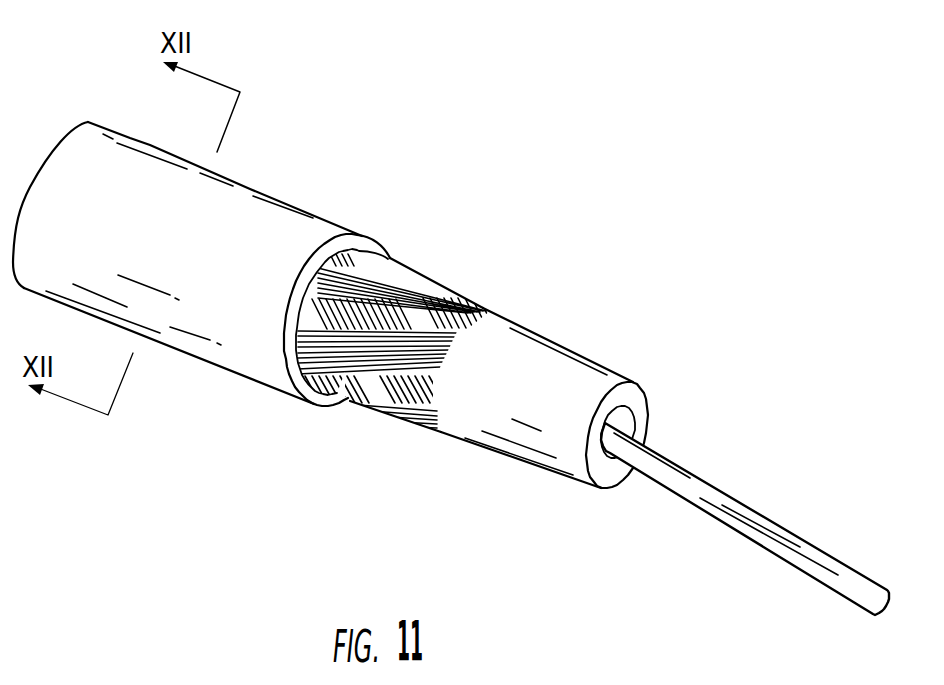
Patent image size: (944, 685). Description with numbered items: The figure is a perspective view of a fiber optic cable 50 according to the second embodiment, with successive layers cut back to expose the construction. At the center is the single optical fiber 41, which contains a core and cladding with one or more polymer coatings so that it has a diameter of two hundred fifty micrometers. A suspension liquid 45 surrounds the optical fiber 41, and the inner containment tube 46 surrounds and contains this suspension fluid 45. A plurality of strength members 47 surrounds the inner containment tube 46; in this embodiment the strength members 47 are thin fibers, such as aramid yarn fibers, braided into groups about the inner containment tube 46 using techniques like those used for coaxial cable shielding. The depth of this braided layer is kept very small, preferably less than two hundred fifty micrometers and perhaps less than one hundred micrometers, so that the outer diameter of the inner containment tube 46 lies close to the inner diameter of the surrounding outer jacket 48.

The optical fiber 41 is at (782, 513).
The suspension liquid 45 is at (622, 417).
The inner containment tube 46 is at (562, 347).
The strength members 47 is at (412, 272).
The outer jacket 48 is at (188, 266).
The fiber optic cable 50 is at (438, 91).